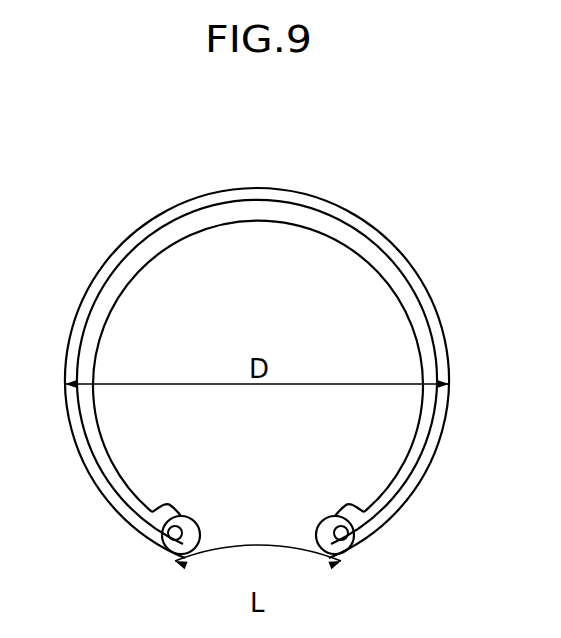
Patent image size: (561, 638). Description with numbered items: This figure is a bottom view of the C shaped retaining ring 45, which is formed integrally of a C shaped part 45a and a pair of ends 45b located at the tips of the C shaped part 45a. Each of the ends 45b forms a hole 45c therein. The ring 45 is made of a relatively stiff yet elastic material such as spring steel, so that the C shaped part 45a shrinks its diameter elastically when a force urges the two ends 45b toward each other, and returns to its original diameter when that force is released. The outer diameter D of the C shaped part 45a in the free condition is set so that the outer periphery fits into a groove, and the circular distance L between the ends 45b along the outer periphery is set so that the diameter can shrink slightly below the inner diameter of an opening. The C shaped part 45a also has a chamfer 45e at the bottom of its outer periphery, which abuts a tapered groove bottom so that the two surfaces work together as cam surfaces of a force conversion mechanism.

The C shaped retaining ring 45 is at (257, 335).
The C shaped part 45a is at (330, 198).
The chamfer 45e is at (380, 233).
The ends 45b is at (181, 516).
The holes 45c is at (175, 533).